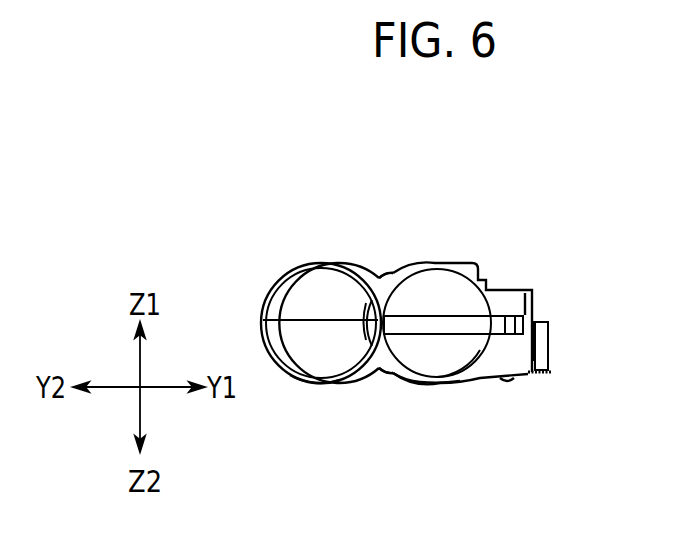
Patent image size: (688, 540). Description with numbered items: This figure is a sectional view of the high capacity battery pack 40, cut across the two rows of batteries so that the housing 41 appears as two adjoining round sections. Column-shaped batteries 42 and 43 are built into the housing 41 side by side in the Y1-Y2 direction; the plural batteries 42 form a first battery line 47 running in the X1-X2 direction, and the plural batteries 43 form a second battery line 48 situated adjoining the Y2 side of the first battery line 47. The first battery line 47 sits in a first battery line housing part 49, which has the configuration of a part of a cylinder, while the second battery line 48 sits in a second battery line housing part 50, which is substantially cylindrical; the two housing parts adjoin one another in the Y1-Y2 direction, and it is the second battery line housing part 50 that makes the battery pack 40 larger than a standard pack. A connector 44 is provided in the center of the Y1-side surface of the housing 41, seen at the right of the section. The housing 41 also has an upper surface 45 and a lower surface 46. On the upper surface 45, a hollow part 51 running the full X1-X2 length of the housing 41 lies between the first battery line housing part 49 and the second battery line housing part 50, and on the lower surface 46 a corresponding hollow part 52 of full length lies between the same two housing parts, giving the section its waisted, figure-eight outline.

The high capacity battery pack 40 is at (507, 135).
The housing 41 is at (276, 268).
The battery 42 is at (440, 277).
The battery 43 is at (322, 279).
The connector 44 is at (550, 343).
The upper surface 45 is at (422, 264).
The lower surface 46 is at (441, 383).
The first battery line 47 is at (458, 353).
The second battery line 48 is at (308, 353).
The first battery line housing part 49 is at (410, 382).
The second battery line housing part 50 is at (314, 383).
The hollow part 51 is at (374, 278).
The hollow part 52 is at (378, 372).